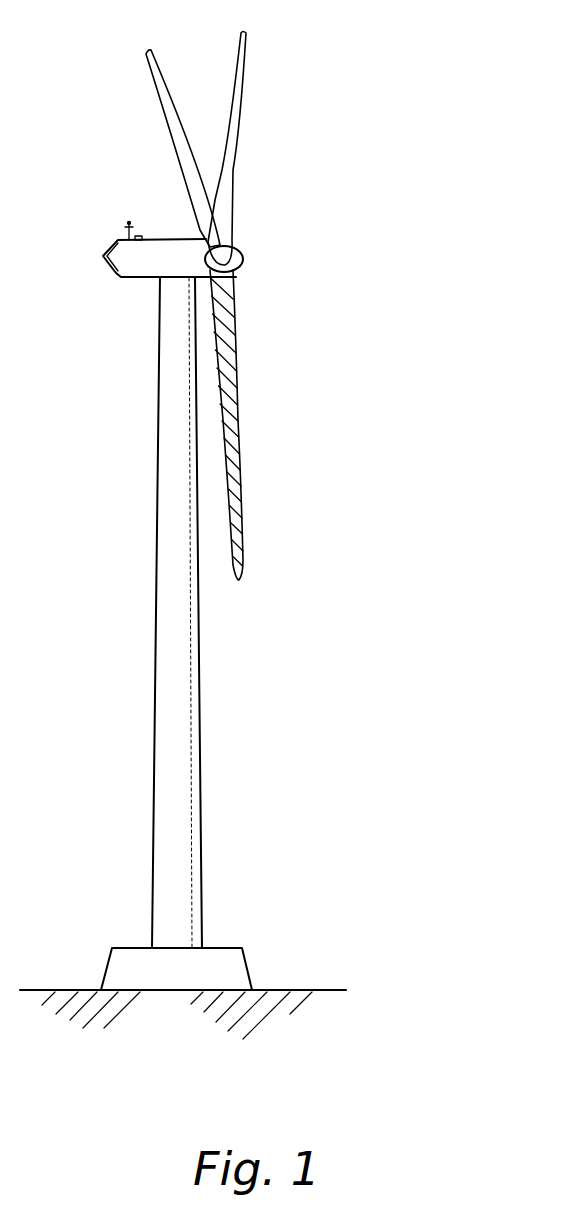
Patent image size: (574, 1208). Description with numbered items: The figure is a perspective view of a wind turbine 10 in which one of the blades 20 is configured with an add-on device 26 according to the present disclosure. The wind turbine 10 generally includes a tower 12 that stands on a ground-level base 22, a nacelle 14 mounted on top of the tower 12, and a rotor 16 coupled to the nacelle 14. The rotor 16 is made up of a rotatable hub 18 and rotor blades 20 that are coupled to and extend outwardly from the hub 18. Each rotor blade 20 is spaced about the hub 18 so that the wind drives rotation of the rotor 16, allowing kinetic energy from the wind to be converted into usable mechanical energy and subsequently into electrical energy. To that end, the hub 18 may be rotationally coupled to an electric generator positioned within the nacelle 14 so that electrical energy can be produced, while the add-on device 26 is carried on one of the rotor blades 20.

The wind turbine 10 is at (207, 527).
The tower 12 is at (163, 731).
The nacelle 14 is at (140, 280).
The rotor 16 is at (238, 297).
The hub 18 is at (240, 258).
The rotor blade 20 is at (221, 297).
The ground-level base 22 is at (225, 948).
The add-on device 26 is at (230, 350).